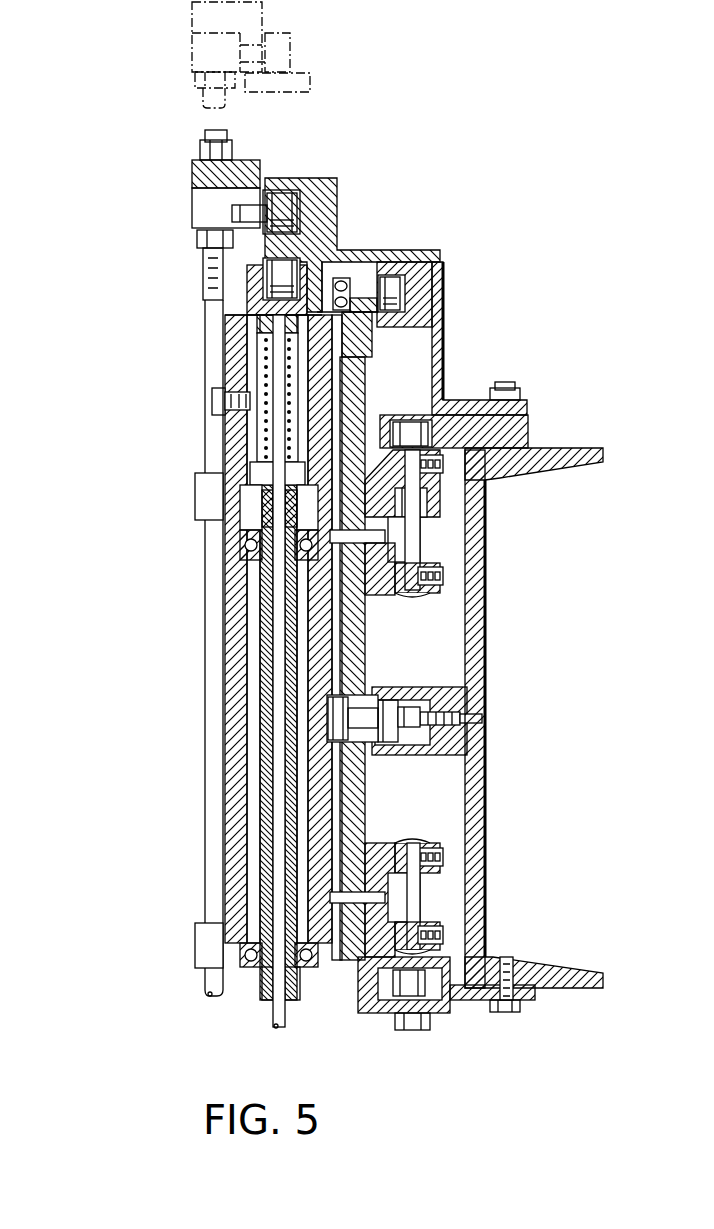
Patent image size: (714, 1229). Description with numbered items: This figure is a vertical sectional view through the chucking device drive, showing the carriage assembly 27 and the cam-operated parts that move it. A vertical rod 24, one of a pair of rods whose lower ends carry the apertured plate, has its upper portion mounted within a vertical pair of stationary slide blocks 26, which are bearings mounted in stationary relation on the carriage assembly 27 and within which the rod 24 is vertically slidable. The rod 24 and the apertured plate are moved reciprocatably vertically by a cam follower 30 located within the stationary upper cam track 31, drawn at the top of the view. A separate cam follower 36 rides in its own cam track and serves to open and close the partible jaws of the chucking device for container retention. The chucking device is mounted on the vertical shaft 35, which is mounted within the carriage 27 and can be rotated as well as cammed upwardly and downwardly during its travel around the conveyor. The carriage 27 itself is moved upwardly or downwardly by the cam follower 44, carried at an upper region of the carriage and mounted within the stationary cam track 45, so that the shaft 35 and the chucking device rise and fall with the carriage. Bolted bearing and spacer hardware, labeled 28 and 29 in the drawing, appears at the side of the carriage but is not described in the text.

The vertical rod 24 is at (205, 622).
The slide block 26 is at (194, 492).
The carriage assembly 27 is at (188, 705).
The bolt 28 is at (390, 707).
The bearing block 29 is at (409, 745).
The cam follower 30 is at (290, 40).
The stationary upper cam track 31 is at (338, 204).
The vertical shaft 35 is at (285, 1026).
The cam follower 36 is at (272, 272).
The cam follower 44 is at (430, 248).
The cam track 45 is at (402, 309).